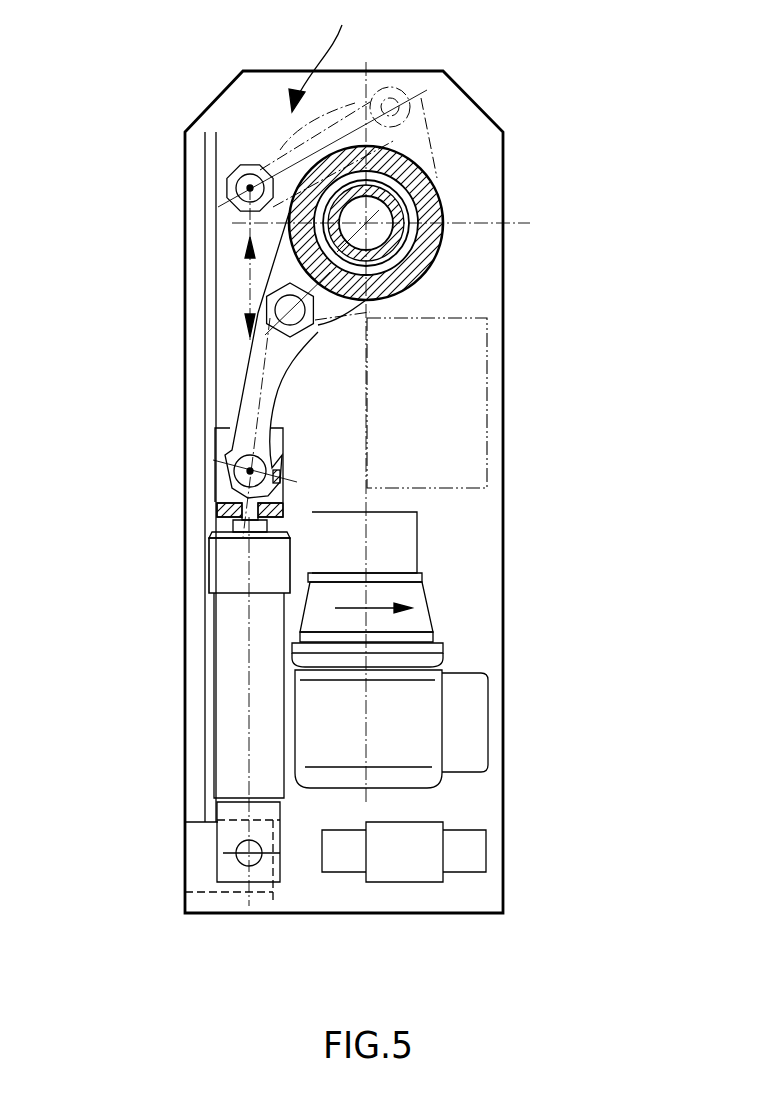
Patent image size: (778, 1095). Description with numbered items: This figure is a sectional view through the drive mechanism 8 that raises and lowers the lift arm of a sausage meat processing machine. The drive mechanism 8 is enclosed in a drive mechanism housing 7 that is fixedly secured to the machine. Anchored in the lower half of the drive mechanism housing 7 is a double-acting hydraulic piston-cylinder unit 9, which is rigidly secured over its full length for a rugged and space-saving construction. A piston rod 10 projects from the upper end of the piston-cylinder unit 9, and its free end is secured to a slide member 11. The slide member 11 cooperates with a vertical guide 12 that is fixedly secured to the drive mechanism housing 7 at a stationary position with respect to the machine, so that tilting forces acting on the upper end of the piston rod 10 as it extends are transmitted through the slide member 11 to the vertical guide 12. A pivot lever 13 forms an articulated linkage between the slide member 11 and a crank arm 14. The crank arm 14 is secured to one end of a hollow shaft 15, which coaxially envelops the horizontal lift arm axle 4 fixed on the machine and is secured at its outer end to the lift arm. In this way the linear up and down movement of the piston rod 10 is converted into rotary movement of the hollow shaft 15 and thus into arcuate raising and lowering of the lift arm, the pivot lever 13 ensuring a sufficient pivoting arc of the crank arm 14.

The lift arm axle 4 is at (400, 208).
The drive mechanism housing 7 is at (452, 913).
The drive mechanism 8 is at (320, 56).
The double-acting hydraulic piston-cylinder unit 9 is at (233, 627).
The piston rod 10 is at (245, 528).
The slide member 11 is at (237, 493).
The vertical guide 12 is at (218, 440).
The pivot lever 13 is at (263, 365).
The crank arm 14 is at (287, 268).
The hollow shaft 15 is at (403, 175).